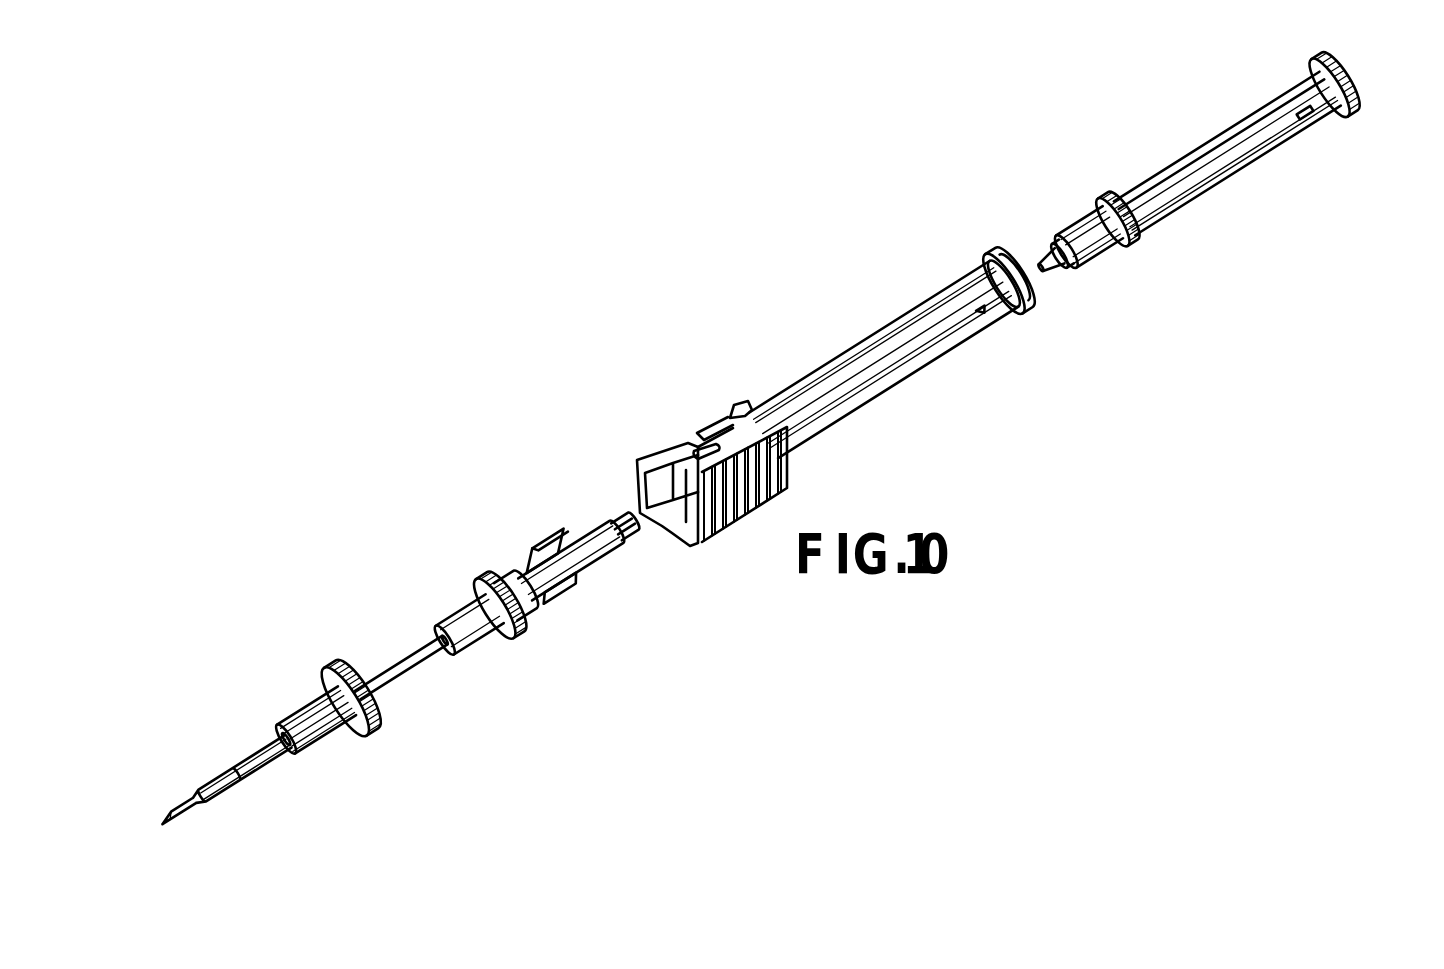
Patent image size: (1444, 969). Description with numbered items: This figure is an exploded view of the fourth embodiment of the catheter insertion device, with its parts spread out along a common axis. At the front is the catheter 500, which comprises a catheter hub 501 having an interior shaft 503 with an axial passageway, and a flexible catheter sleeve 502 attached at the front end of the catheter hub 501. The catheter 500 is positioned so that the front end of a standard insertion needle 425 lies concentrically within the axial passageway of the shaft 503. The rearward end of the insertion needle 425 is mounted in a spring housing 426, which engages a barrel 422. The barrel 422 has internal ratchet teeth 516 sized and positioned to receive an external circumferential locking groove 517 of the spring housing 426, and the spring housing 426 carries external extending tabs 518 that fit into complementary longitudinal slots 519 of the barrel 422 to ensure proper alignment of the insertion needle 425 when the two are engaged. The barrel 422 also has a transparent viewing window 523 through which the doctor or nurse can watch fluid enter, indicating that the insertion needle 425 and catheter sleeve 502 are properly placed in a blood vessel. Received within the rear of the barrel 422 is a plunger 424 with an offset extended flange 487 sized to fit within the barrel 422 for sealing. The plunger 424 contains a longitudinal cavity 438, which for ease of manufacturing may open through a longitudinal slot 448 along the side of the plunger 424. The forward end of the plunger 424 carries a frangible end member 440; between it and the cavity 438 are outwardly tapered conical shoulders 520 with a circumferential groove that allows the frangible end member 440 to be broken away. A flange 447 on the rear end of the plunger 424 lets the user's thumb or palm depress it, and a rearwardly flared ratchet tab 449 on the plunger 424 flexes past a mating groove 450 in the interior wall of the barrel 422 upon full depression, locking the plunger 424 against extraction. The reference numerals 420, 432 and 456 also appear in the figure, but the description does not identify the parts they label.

The syringe 420 is at (896, 346).
The barrel 422 is at (838, 408).
The plunger 424 is at (1217, 183).
The insertion needle 425 is at (398, 663).
The spring housing 426 is at (534, 583).
The hub body 432 is at (470, 633).
The longitudinal cavity 438 is at (1229, 148).
The frangible end member 440 is at (1055, 275).
The flange 447 is at (1363, 85).
The longitudinal slot 448 is at (1228, 137).
The ratchet tab 449 is at (1307, 133).
The mating groove 450 is at (985, 318).
The hub stem 456 is at (593, 570).
The offset extended flange 487 is at (1135, 252).
The catheter 500 is at (273, 744).
The catheter hub 501 is at (303, 707).
The flexible catheter sleeve 502 is at (247, 780).
The interior shaft 503 is at (340, 727).
The internal ratchet teeth 516 is at (681, 442).
The external circumferential locking groove 517 is at (537, 637).
The external extending tabs 518 is at (545, 542).
The longitudinal slots 519 is at (693, 440).
The outwardly tapered conical shoulders 520 is at (1087, 213).
The transparent viewing window 523 is at (713, 440).